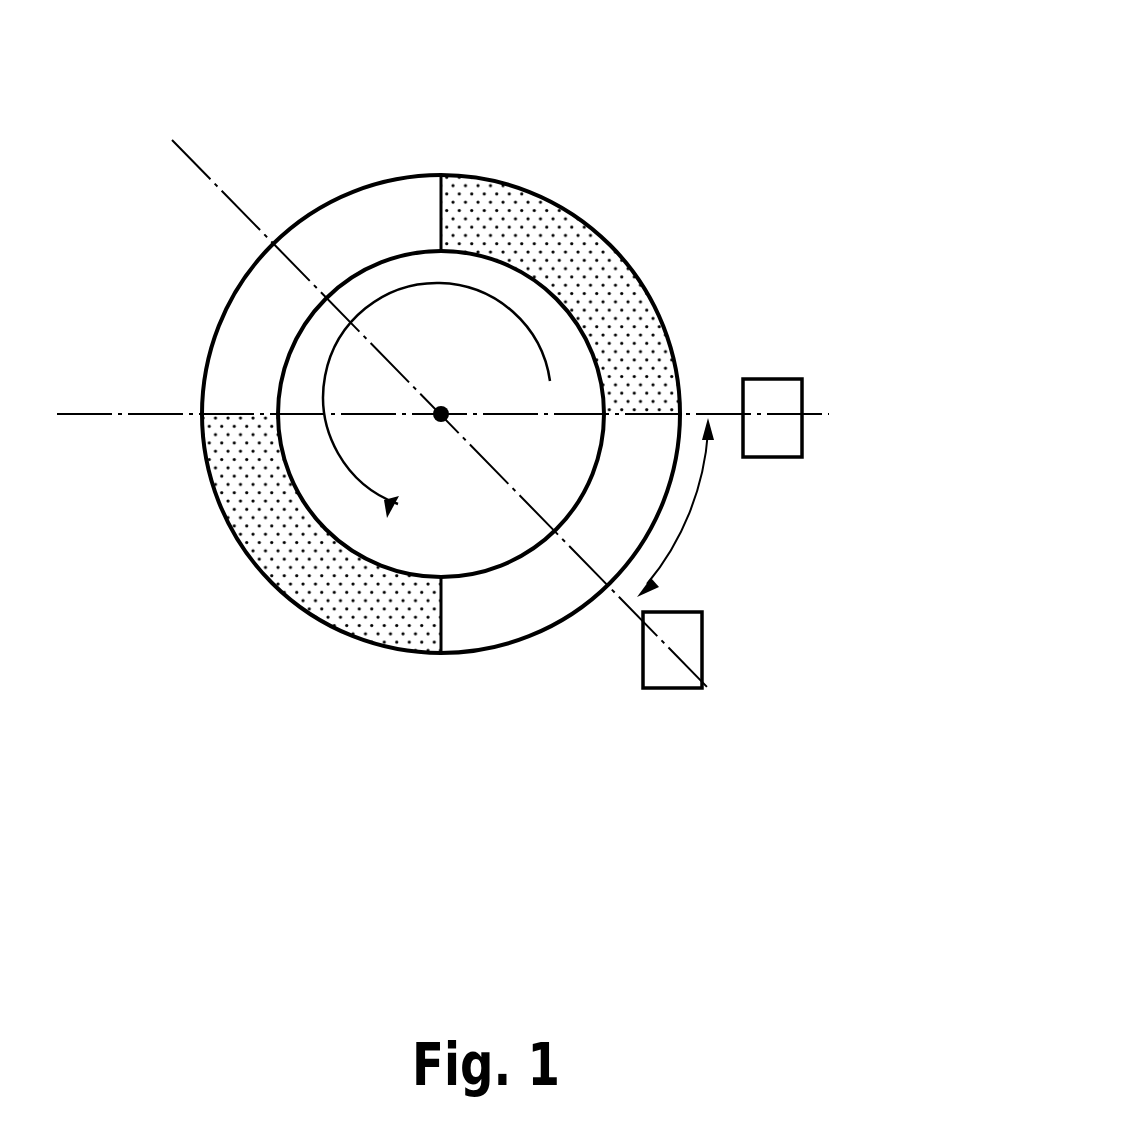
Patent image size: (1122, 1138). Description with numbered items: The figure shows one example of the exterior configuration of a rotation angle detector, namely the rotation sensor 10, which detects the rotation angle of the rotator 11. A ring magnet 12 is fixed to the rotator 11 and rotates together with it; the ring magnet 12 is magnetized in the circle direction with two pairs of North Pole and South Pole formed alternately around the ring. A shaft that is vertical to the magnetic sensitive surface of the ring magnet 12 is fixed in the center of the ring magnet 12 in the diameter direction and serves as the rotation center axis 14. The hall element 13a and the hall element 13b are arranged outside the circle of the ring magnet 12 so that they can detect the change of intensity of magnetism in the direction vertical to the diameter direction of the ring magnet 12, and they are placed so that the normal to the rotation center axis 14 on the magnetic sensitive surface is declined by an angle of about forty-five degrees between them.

The rotation sensor 10 is at (489, 407).
The rotator 11 is at (578, 379).
The ring magnet 12 is at (397, 220).
The hall element 13a is at (802, 437).
The hall element 13b is at (670, 690).
The rotation center axis 14 is at (436, 422).